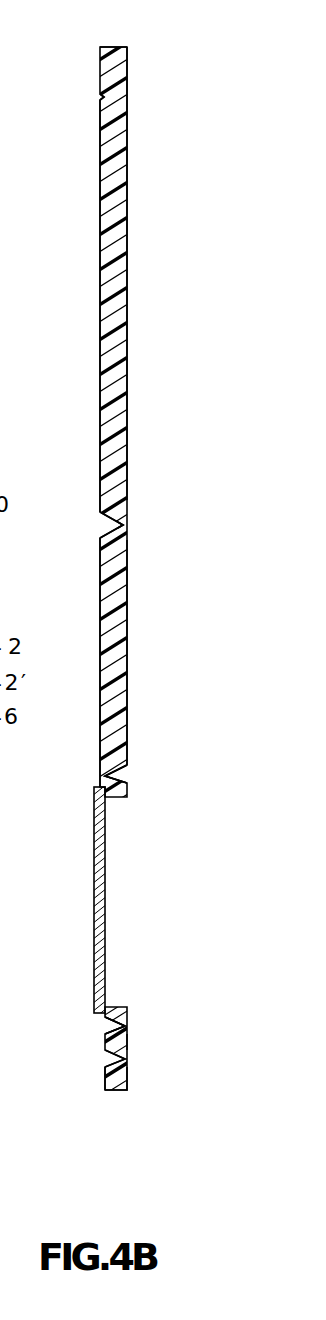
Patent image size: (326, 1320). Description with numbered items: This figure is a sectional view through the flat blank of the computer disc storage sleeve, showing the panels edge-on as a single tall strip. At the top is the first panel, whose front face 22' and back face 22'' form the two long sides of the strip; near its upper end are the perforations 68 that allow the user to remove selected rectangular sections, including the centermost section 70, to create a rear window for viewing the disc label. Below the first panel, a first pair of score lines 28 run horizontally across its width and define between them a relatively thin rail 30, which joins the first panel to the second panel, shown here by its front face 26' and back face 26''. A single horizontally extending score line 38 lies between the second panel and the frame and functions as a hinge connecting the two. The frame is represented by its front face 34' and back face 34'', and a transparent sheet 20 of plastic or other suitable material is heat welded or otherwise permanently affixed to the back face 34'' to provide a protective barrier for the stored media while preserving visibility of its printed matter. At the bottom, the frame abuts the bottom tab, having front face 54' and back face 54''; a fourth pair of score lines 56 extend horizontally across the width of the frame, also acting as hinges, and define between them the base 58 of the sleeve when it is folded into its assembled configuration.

The transparent sheet 20 is at (95, 897).
The front face of first panel 22' is at (167, 273).
The back face of first panel 22'' is at (61, 306).
The front face of second panel 26' is at (169, 652).
The back face of second panel 26'' is at (76, 662).
The first pair of score lines 28 is at (98, 511).
The rail 30 is at (127, 519).
The front face of frame 34' is at (155, 901).
The back face of frame 34'' is at (69, 906).
The score line 38 is at (130, 771).
The front face of bottom tab 54' is at (156, 1107).
The back face of bottom tab 54'' is at (86, 1106).
The fourth pair of score lines 56 is at (136, 1025).
The base 58 is at (128, 1042).
The perforations 68 is at (126, 97).
The centermost section 70 is at (107, 50).